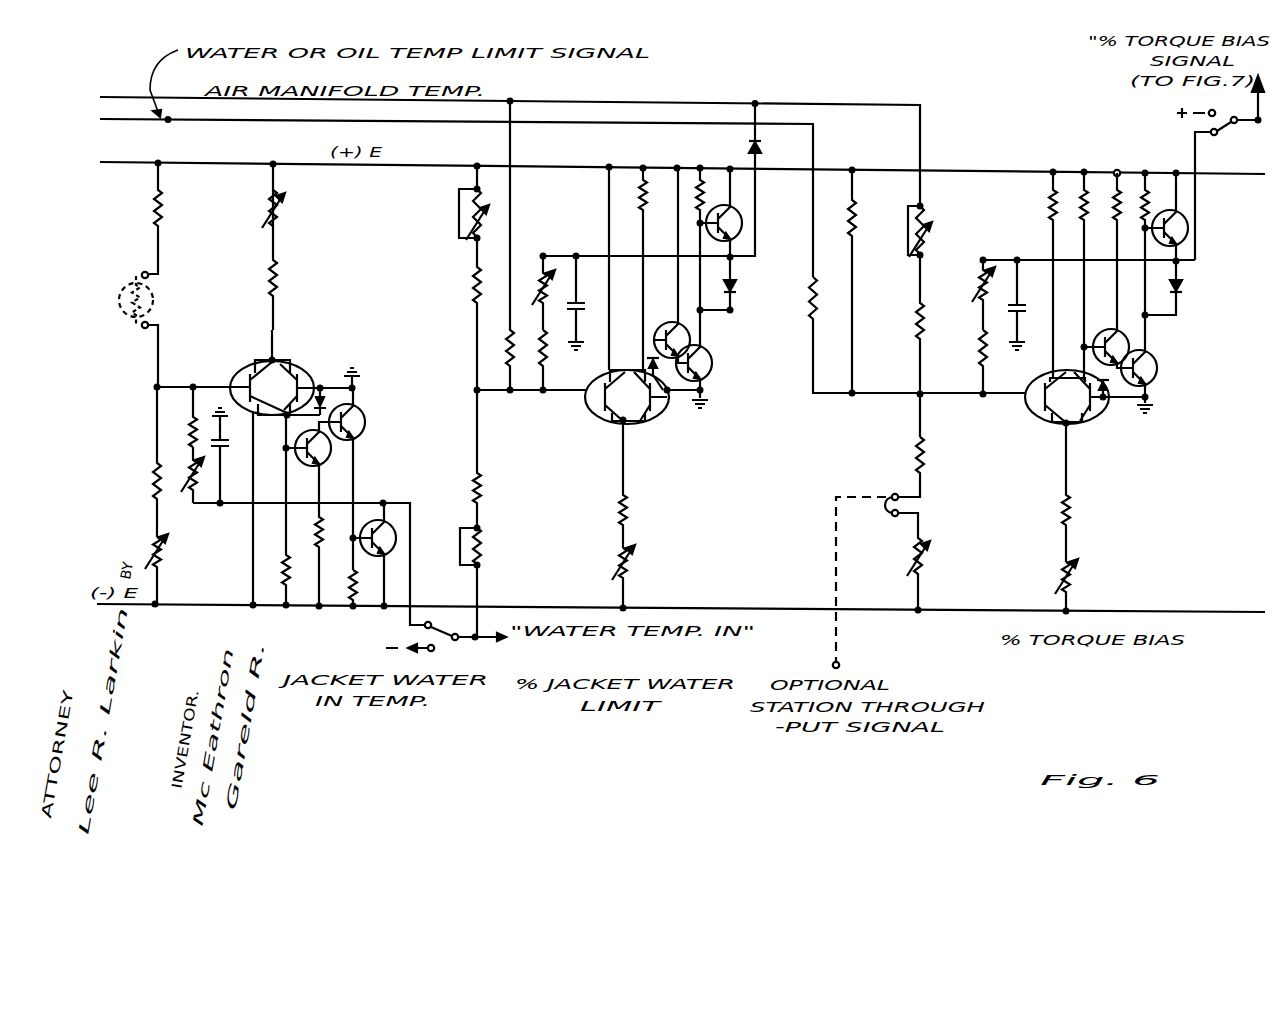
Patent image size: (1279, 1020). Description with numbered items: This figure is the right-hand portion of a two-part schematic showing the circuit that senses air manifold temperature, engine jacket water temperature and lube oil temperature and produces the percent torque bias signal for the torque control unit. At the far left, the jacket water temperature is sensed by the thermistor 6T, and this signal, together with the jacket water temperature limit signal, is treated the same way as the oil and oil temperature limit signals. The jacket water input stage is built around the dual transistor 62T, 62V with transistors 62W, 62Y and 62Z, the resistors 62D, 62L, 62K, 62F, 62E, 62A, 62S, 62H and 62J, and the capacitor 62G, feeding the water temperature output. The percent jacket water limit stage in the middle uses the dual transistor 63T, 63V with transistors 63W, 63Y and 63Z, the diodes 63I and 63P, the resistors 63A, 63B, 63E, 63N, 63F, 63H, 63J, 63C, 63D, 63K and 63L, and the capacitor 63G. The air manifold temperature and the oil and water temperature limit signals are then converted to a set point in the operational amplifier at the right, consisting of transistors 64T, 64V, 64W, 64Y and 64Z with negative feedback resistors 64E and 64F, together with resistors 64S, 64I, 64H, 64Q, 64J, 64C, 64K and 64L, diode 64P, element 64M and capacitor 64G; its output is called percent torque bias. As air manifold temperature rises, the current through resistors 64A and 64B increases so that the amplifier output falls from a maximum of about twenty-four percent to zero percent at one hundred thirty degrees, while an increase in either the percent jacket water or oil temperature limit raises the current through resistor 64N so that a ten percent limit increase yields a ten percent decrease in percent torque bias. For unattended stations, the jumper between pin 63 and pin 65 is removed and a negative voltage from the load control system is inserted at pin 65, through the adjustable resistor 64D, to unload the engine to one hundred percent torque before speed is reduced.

The thermistor 6T is at (165, 299).
The resistor 62D is at (162, 213).
The variable resistor 62L is at (282, 213).
The resistor 62K is at (280, 283).
The dual transistor section 62T is at (272, 372).
The dual transistor section 62V is at (303, 389).
The transistor 62Y is at (367, 431).
The resistor 62F is at (191, 430).
The capacitor 62G is at (240, 462).
The transistor 62W is at (300, 468).
The variable resistor 62E is at (175, 502).
The variable resistor 62A is at (168, 558).
The resistor 62S is at (306, 534).
The transistor 62Z is at (401, 537).
The resistor 62H is at (292, 568).
The resistor 62J is at (363, 578).
The variable resistor 63A is at (457, 224).
The resistor 63B is at (470, 289).
The variable resistor 63E is at (535, 273).
The capacitor 63G is at (590, 301).
The resistor 63N is at (495, 344).
The resistor 63F is at (530, 344).
The resistor 63H is at (655, 203).
The resistor 63J is at (712, 203).
The diode 63I is at (764, 148).
The transistor 63Z is at (737, 236).
The diode 63P is at (737, 295).
The transistor 63W is at (692, 335).
The transistor 63Y is at (712, 371).
The dual transistor section 63T is at (627, 295).
The dual transistor section 63V is at (638, 396).
The resistor 63C is at (496, 499).
The resistor 63D is at (496, 552).
The resistor 63K is at (629, 508).
The variable resistor 63L is at (631, 566).
The resistor 64N is at (818, 300).
The resistor 64S is at (870, 215).
The resistor 64A is at (942, 241).
The resistor 64B is at (941, 324).
The resistor 64C is at (941, 466).
The pin 65 is at (891, 490).
The pin 63 is at (885, 520).
The variable resistor 64D is at (941, 568).
The negative feedback resistor 64E is at (969, 282).
The negative feedback resistor 64F is at (969, 353).
The capacitor 64G is at (1028, 308).
The resistor 64I is at (1042, 212).
The resistor 64H is at (1072, 207).
The resistor 64Q is at (1104, 207).
The resistor 64J is at (1160, 208).
The transistor 64Z is at (1190, 232).
The diode 64P is at (1185, 292).
The transistor 64W is at (1132, 345).
The transistor 64Y is at (1157, 376).
The transistor 64T is at (1067, 397).
The transistor 64V is at (1097, 397).
The zener diode 64M is at (1108, 403).
The resistor 64K is at (1087, 518).
The variable resistor 64L is at (1087, 588).